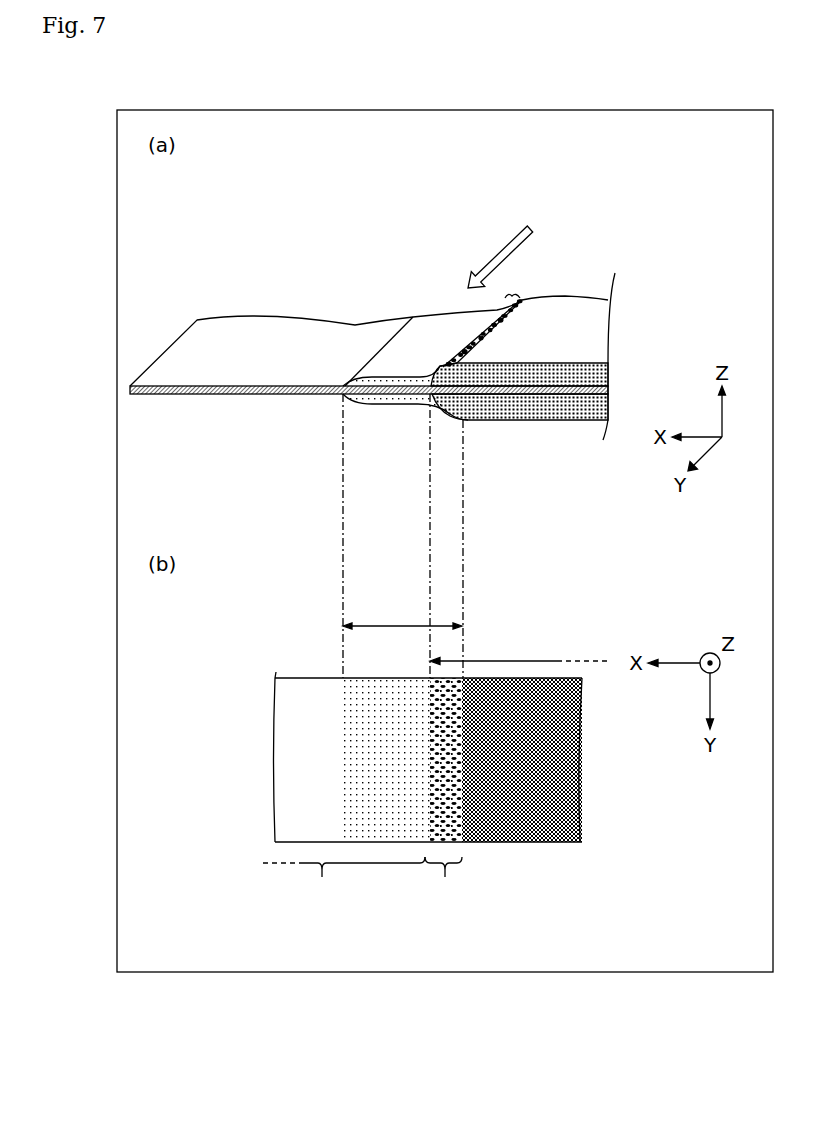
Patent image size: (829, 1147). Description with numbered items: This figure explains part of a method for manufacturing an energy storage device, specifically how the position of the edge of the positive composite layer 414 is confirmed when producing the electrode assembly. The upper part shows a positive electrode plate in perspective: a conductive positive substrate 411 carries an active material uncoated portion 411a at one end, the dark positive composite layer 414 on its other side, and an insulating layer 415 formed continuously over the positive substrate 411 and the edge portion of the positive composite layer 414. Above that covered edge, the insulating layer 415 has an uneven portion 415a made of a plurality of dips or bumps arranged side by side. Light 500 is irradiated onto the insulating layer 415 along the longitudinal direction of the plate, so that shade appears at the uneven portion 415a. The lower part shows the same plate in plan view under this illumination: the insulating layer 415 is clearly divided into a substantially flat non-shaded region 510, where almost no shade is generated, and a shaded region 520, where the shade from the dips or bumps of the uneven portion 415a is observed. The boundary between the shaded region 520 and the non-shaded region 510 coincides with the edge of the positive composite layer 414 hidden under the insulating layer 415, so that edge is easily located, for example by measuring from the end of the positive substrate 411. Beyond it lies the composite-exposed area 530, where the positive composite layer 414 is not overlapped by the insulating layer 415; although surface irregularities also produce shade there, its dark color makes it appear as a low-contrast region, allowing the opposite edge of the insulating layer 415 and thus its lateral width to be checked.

The positive substrate 411 is at (170, 346).
The active material uncoated portion 411a is at (237, 360).
The positive composite layer 414 is at (490, 407).
The insulating layer 415 is at (435, 335).
The uneven portion 415a is at (508, 292).
The light 500 is at (495, 262).
The non-shaded region 510 is at (385, 710).
The shaded region 520 is at (450, 810).
The composite-exposed area 530 is at (516, 776).